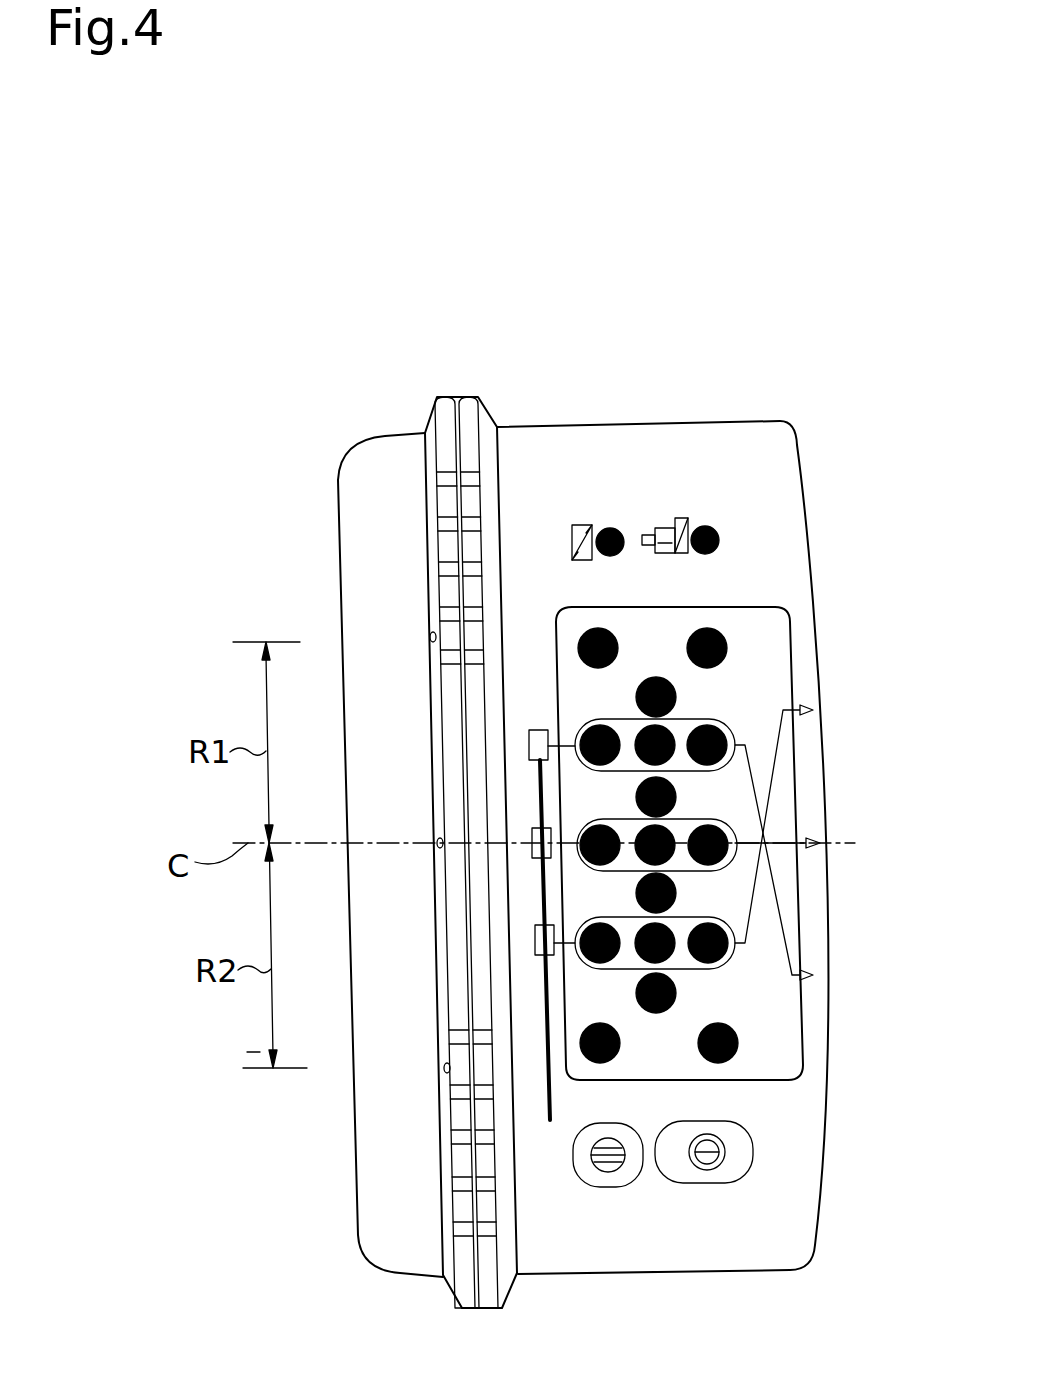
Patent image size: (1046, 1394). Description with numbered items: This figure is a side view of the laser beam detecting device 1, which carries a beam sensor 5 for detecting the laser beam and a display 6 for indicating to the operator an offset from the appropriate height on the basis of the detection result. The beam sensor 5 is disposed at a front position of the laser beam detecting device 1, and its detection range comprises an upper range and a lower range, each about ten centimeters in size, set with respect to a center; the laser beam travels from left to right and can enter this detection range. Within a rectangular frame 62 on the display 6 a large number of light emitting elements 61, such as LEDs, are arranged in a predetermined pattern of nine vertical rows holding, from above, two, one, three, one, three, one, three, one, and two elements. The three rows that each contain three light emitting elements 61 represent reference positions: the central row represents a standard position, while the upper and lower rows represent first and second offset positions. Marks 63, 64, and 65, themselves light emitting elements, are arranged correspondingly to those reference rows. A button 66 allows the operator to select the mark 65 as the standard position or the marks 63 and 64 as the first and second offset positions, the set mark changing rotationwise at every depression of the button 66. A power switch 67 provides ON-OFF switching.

The laser beam detecting device 1 is at (679, 362).
The beam sensor 5 is at (362, 390).
The display 6 is at (730, 913).
The light emitting elements 61 is at (765, 1036).
The rectangular frame 62 is at (790, 643).
The mark 63 is at (538, 730).
The mark 64 is at (537, 951).
The mark 65 is at (533, 855).
The button 66 is at (608, 1188).
The power switch 67 is at (707, 1184).